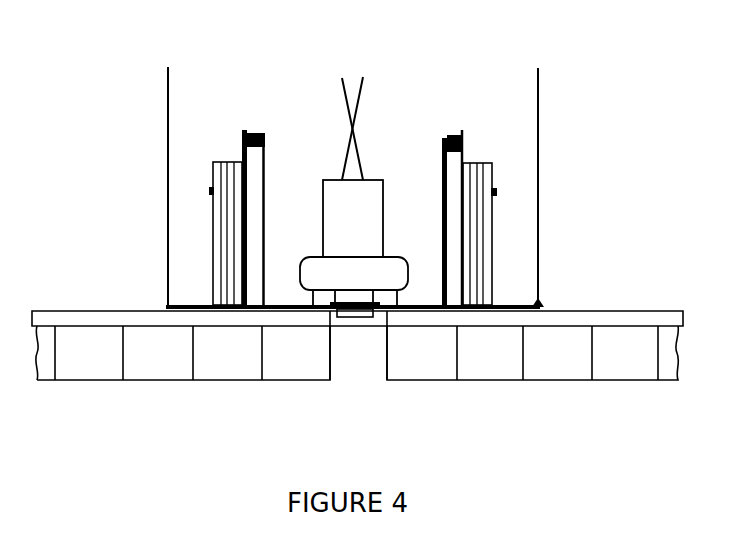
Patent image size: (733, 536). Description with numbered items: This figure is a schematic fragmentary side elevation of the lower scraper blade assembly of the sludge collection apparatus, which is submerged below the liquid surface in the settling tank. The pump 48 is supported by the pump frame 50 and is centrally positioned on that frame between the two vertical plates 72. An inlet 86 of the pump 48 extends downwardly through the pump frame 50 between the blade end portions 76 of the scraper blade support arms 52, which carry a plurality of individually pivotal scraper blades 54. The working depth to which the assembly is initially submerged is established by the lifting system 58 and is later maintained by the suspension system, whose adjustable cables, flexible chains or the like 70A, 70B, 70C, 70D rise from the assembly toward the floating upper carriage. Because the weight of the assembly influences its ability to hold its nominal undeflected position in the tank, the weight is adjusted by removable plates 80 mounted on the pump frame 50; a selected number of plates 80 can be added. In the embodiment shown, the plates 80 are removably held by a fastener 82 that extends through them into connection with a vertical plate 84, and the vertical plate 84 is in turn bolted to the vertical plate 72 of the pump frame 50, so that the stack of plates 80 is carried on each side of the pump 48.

The pump 48 is at (342, 220).
The pump frame 50 is at (172, 306).
The scraper blade support arms 52 is at (95, 317).
The scraper blades 54 is at (47, 380).
The lifting system 58 is at (452, 73).
The adjustable cable 70A is at (168, 102).
The adjustable cable 70B is at (364, 77).
The adjustable cable 70C is at (342, 78).
The adjustable cable 70D is at (538, 103).
The vertical plate 72 is at (264, 147).
The blade end portions 76 is at (327, 318).
The removable plates 80 is at (240, 158).
The fastener 82 is at (211, 190).
The vertical plate 84 is at (258, 278).
The inlet 86 is at (350, 318).